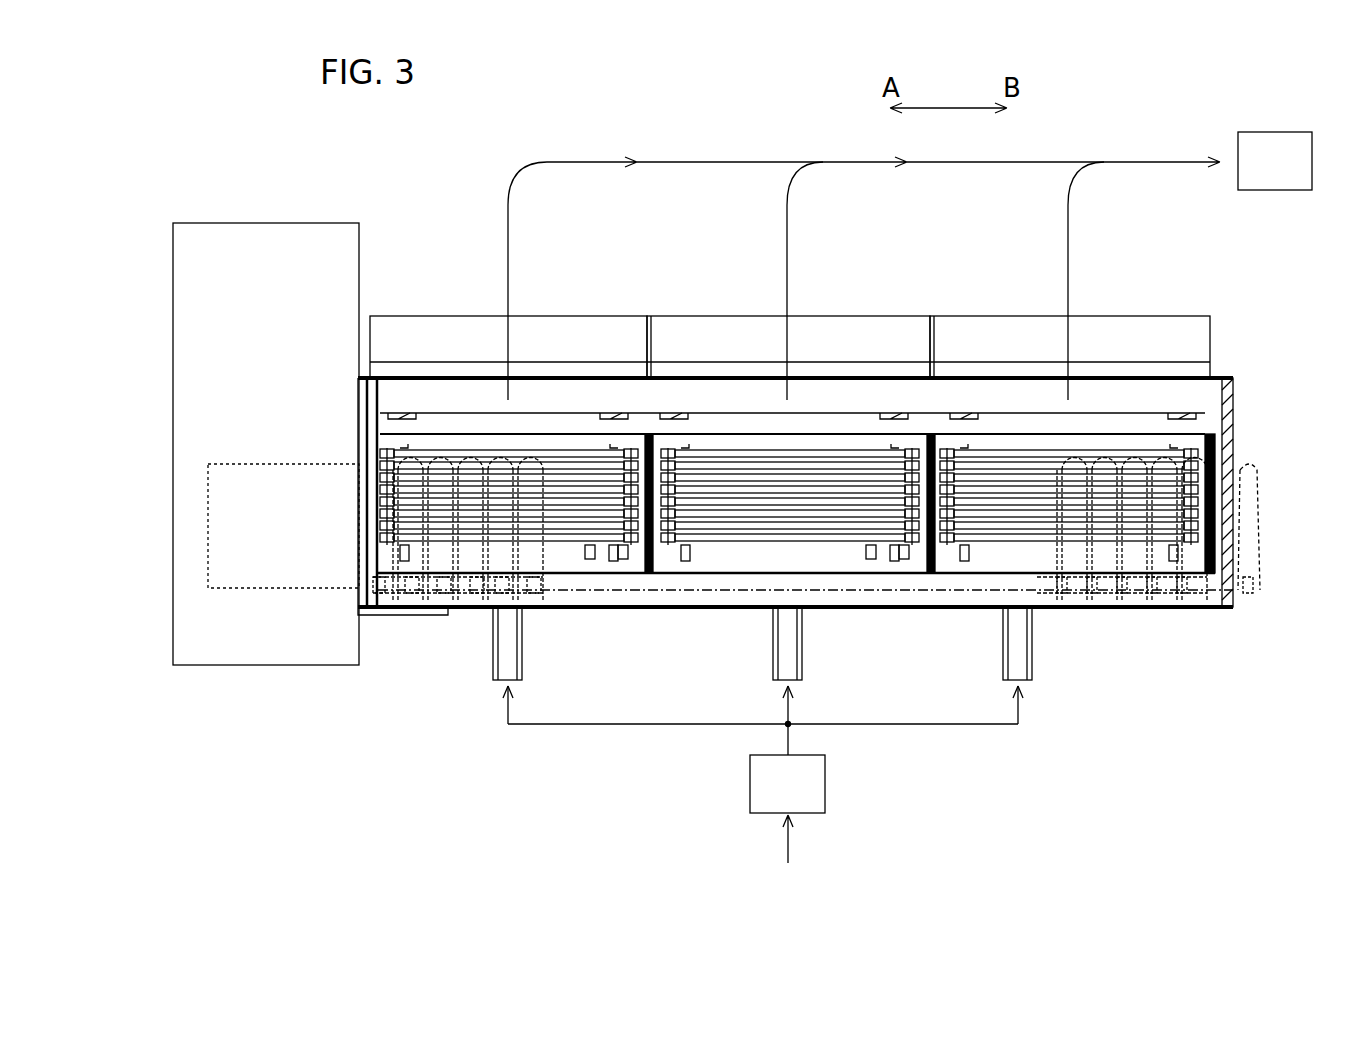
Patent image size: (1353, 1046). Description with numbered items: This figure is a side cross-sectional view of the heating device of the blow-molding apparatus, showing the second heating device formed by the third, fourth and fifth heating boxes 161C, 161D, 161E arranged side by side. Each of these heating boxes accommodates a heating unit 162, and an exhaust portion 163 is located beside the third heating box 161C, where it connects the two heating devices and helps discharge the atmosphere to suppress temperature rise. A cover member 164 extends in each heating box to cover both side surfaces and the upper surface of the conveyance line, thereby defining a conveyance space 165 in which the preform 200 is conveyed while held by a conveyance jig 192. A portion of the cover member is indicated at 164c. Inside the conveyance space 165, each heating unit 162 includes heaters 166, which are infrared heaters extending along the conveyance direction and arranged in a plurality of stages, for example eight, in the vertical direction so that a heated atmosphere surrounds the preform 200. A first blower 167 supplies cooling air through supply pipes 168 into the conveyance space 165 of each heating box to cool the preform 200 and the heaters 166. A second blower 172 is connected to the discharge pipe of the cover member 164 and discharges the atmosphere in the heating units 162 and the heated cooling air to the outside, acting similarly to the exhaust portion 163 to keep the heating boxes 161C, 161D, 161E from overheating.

The third heating box 161C is at (644, 288).
The fourth heating box 161D is at (917, 288).
The fifth heating box 161E is at (1197, 288).
The exhaust portion 163 is at (208, 512).
The cover member 164 is at (864, 278).
The gas supply pipe section 164c is at (990, 395).
The conveyance space 165 is at (1095, 400).
The heater 166 is at (1160, 658).
The heating unit 162 is at (808, 573).
The first blower 167 is at (815, 785).
The supply pipe 168 is at (1083, 640).
The second blower 172 is at (1248, 155).
The conveyance jig 192 is at (430, 592).
The preform 200 is at (477, 605).